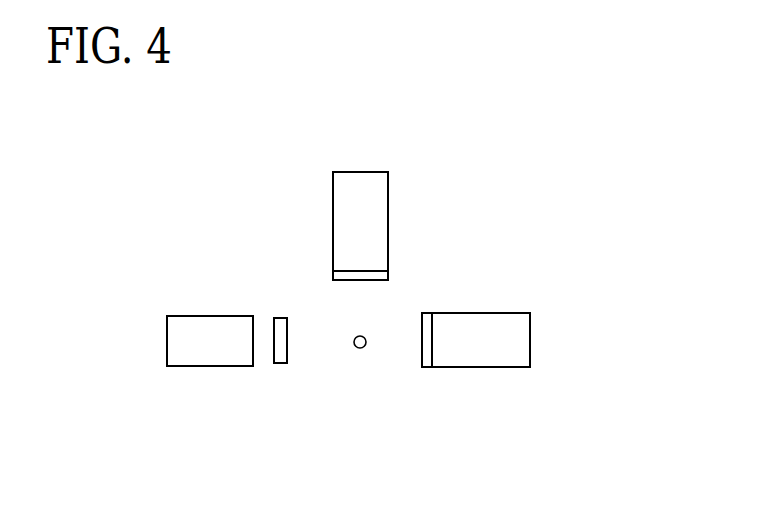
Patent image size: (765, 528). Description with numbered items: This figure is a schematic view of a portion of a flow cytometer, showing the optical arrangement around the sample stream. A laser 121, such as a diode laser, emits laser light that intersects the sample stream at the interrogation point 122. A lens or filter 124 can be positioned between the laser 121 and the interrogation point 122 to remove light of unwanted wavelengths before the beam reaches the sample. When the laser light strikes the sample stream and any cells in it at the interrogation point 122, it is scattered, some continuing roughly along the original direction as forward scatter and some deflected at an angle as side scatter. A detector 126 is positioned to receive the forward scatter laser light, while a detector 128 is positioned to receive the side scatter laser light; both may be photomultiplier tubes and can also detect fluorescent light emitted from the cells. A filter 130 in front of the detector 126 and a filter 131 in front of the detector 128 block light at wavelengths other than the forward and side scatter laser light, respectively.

The laser 121 is at (198, 335).
The interrogation point 122 is at (364, 348).
The lens or filter 124 is at (279, 363).
The detector 126 is at (522, 339).
The detector 128 is at (365, 198).
The filter 130 is at (425, 368).
The filter 131 is at (388, 273).